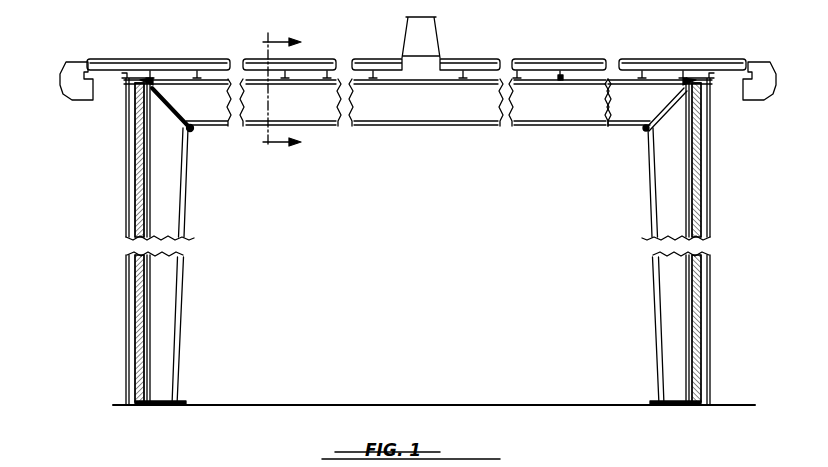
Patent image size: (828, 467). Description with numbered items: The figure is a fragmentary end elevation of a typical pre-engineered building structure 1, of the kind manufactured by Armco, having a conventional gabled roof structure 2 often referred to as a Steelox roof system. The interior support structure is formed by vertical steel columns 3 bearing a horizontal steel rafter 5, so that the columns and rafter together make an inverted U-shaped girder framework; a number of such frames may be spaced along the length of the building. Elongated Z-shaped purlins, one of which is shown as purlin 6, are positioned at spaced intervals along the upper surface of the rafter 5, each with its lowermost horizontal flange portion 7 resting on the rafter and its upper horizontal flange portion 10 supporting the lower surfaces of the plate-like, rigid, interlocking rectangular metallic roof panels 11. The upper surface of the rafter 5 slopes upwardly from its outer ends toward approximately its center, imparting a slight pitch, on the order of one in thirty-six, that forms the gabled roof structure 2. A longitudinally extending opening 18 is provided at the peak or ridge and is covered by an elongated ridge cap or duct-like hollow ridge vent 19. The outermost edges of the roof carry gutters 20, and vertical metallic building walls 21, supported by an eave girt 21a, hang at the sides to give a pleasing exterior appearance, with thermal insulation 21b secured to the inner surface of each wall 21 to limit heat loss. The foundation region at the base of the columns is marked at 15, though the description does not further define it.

The pre-engineered building structure 1 is at (210, 224).
The gabled roof structure 2 is at (138, 28).
The vertical steel columns 3 is at (182, 334).
The horizontal steel rafter 5 is at (452, 112).
The Z-shaped purlin 6 is at (561, 80).
The lowermost horizontal flange portion 7 is at (553, 71).
The upper horizontal flange portion 10 is at (554, 71).
The roof panels 11 is at (186, 59).
The foundation 15 is at (418, 434).
The longitudinally extending opening 18 is at (425, 43).
The ridge cap 19 is at (446, 30).
The gutters 20 is at (70, 99).
The vertical metallic building walls 21 is at (125, 190).
The eave girt 21a is at (138, 113).
The thermal insulation 21b is at (137, 278).